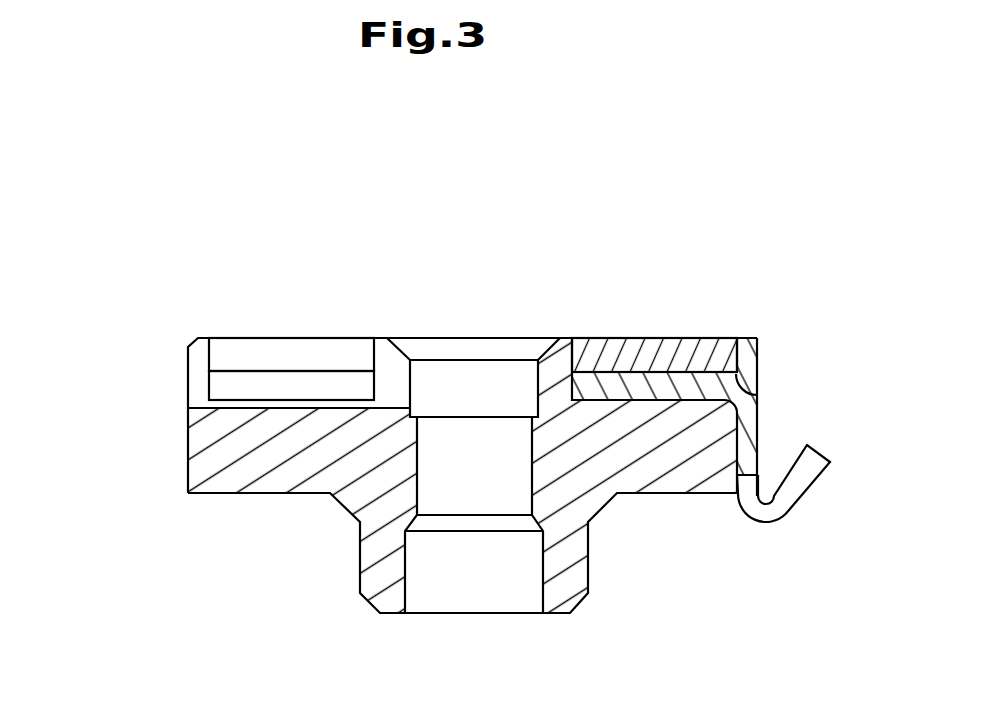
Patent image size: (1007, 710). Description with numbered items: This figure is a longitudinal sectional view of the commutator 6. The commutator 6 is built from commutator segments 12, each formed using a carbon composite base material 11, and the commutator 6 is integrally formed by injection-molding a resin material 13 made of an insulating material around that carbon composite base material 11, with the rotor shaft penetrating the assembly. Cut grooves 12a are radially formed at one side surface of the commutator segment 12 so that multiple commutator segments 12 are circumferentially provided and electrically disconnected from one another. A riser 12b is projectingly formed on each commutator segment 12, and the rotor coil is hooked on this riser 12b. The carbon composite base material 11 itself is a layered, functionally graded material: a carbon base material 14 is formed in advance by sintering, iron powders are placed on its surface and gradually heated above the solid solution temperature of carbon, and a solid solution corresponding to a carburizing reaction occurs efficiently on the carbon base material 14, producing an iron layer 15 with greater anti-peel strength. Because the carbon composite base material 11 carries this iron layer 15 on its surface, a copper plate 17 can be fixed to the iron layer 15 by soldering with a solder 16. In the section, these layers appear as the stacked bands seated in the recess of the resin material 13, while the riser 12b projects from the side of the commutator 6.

The commutator 6 is at (833, 373).
The carbon composite base material 11 is at (658, 337).
The commutator segment 12 is at (708, 338).
The cut groove 12a is at (200, 373).
The riser 12b is at (797, 493).
The resin material 13 is at (655, 465).
The carbon base material 14 is at (277, 350).
The iron layer 15 is at (240, 371).
The solder 16 is at (680, 350).
The copper plate 17 is at (318, 383).